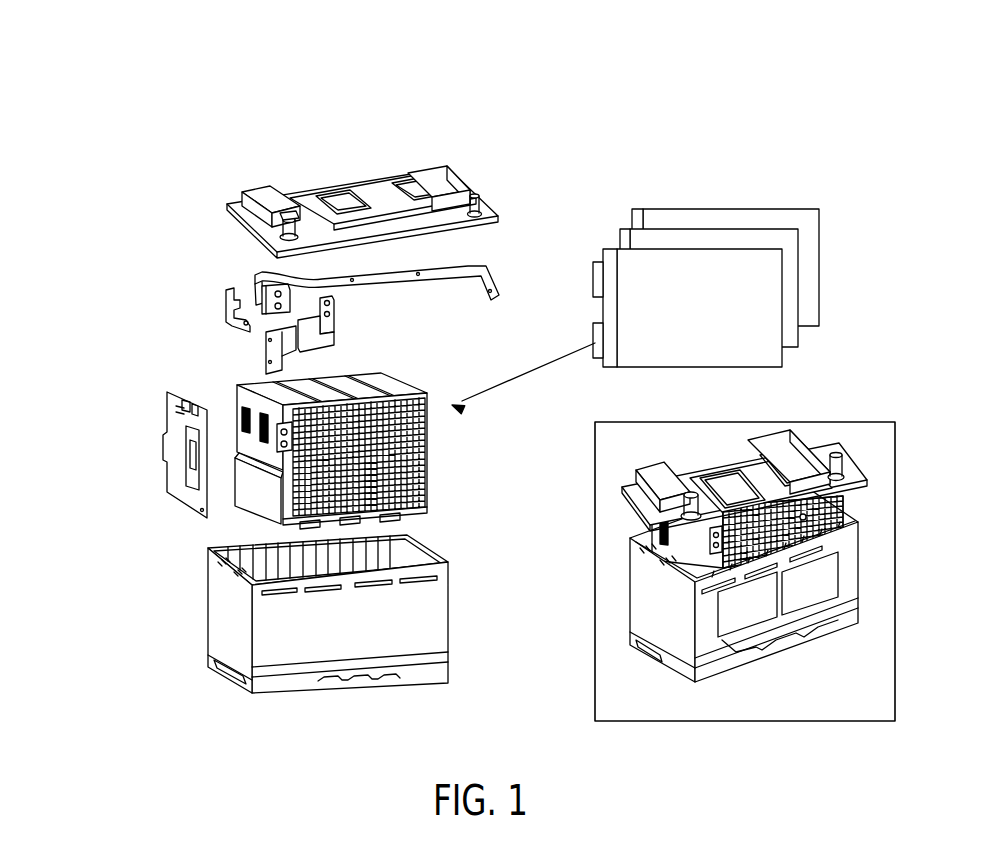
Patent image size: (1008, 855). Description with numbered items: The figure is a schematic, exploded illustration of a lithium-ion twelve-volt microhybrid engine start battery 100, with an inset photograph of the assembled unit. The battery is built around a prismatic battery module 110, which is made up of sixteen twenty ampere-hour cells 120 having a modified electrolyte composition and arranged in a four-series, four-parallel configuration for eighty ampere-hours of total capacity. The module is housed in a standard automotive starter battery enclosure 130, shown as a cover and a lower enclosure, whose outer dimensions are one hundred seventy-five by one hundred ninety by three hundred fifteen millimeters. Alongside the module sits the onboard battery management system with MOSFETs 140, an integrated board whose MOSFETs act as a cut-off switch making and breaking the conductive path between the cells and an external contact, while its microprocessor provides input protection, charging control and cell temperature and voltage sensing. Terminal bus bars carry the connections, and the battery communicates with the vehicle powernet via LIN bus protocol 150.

The microhybrid engine start battery 100 is at (733, 72).
The prismatic battery module 110 is at (450, 467).
The 20 Ah cells 120 is at (723, 208).
The automotive starter battery enclosure 130 is at (210, 222).
The battery management system with MOSFETs 140 is at (168, 473).
The LIN bus protocol 150 is at (283, 350).